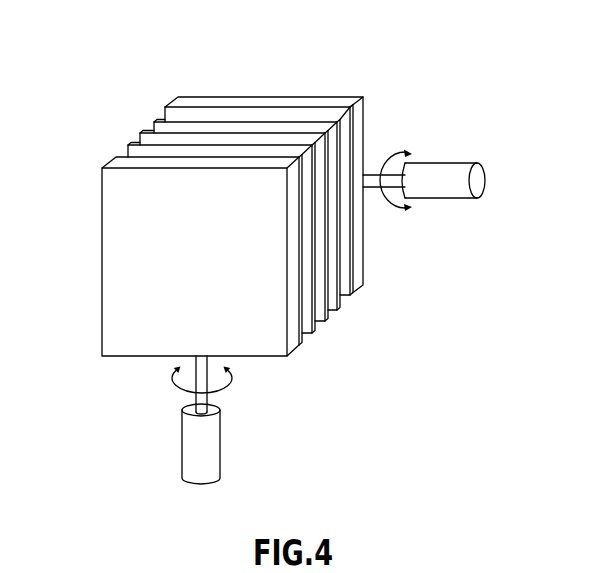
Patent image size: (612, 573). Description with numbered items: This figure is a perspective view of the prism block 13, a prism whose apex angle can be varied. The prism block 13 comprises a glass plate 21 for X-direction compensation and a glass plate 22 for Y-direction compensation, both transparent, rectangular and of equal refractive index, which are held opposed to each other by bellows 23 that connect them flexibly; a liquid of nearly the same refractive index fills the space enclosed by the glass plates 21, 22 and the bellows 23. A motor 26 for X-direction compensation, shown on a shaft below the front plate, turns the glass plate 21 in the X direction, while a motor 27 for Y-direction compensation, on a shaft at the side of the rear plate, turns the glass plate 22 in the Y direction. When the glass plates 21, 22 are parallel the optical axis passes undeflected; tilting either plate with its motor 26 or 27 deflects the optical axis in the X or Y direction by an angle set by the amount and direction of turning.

The prism block 13 is at (245, 61).
The glass plate for X-direction compensation 21 is at (113, 220).
The glass plate for Y-direction compensation 22 is at (321, 104).
The bellows 23 is at (141, 133).
The motor for X-direction compensation 26 is at (193, 482).
The motor for Y-direction compensation 27 is at (484, 178).